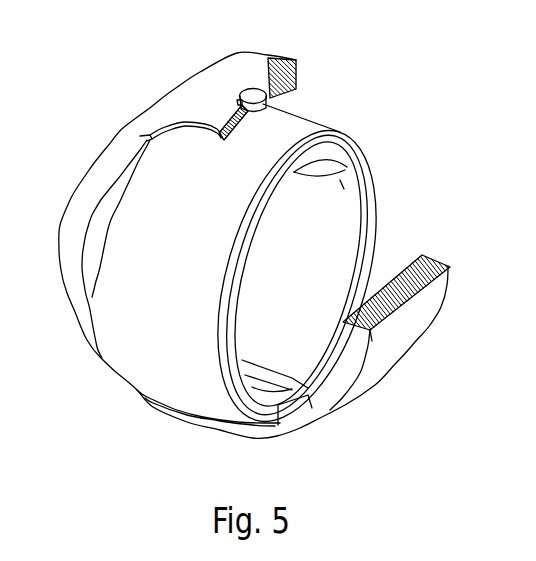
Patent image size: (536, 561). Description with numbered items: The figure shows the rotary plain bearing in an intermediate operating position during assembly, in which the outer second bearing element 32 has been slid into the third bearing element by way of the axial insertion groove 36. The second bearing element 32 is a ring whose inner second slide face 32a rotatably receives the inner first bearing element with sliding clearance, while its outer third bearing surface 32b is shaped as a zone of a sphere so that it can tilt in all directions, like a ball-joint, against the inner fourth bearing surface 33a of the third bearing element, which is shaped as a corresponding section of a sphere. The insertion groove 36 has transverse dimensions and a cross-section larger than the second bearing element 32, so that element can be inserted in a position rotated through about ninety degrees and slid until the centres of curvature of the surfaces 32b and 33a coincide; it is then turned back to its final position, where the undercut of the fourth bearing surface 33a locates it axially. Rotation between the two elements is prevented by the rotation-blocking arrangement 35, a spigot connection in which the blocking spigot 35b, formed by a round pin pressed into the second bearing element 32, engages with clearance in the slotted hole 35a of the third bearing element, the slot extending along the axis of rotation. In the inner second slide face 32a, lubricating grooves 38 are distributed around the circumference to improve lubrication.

The outer second bearing element 32 is at (147, 374).
The inner second slide face 32a is at (343, 223).
The outer third bearing surface 32b is at (112, 310).
The inner fourth bearing surface 33a is at (93, 225).
The rotation-blocking arrangement 35 is at (248, 84).
The slotted hole 35a is at (266, 85).
The blocking spigot 35b is at (270, 108).
The insertion groove 36 is at (140, 140).
The lubricating groove 38 is at (340, 165).